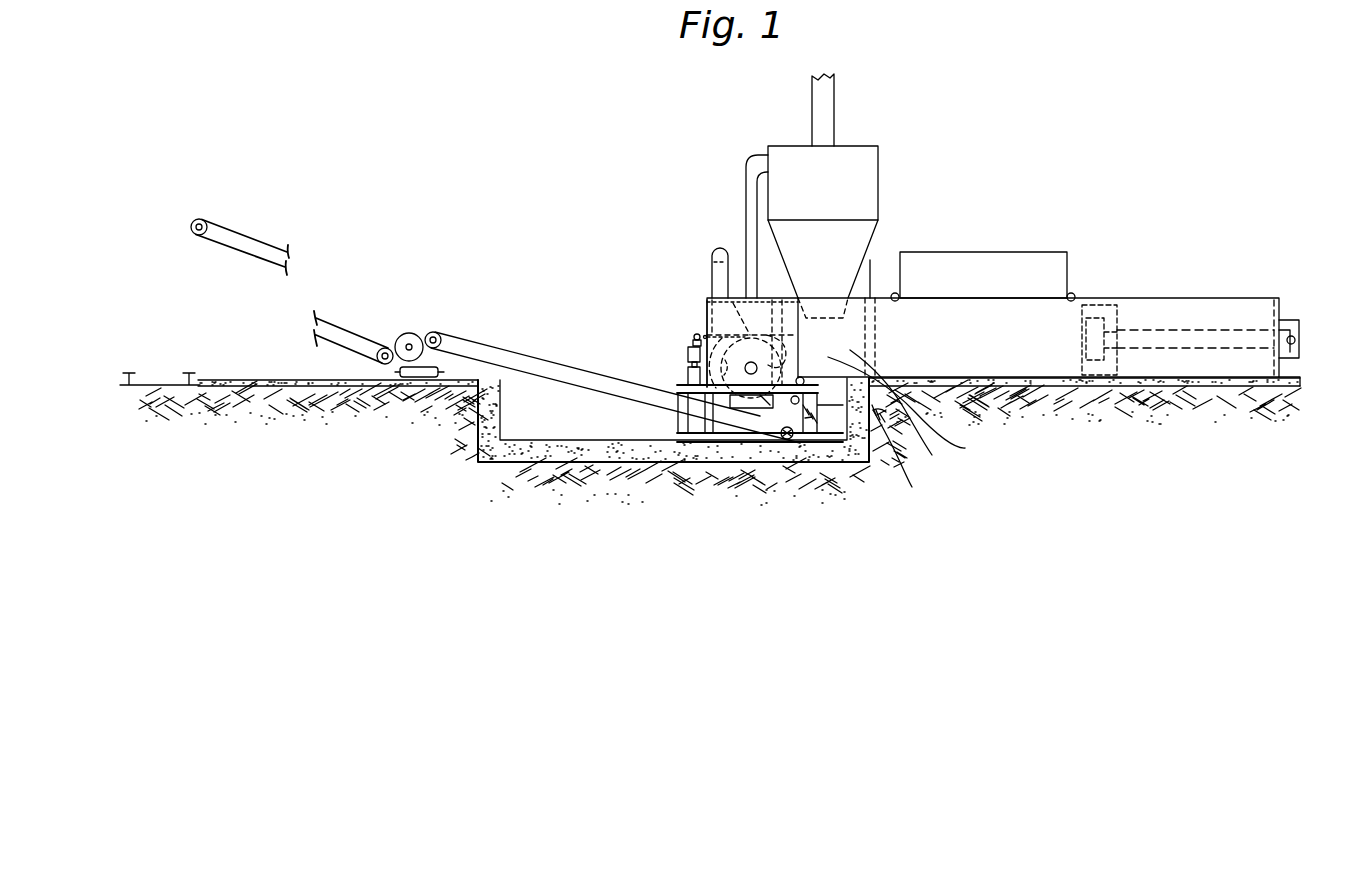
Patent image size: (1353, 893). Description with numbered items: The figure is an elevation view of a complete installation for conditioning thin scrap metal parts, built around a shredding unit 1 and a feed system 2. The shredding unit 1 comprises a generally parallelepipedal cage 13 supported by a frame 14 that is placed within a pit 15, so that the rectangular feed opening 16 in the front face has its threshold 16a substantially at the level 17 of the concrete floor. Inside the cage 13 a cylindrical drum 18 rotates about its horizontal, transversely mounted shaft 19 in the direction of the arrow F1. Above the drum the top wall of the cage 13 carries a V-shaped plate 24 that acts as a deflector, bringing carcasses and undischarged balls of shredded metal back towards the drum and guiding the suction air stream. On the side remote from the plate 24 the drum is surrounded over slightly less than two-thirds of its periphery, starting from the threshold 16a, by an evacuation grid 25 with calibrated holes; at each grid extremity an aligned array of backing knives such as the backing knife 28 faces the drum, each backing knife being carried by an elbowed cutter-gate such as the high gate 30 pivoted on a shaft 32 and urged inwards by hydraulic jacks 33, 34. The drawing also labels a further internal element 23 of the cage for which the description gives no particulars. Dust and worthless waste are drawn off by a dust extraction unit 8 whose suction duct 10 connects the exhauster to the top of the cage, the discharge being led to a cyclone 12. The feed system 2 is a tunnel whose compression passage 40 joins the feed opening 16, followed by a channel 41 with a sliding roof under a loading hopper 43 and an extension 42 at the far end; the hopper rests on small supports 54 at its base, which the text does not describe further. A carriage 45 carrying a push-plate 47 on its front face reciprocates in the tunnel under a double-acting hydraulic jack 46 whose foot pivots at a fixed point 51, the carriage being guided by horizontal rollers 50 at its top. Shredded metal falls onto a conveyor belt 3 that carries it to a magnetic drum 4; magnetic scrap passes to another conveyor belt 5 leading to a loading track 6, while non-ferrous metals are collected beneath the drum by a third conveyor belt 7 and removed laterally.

The shredding unit 1 is at (706, 301).
The feed system 2 is at (1022, 238).
The conveyor belt 3 is at (560, 366).
The magnetic drum 4 is at (414, 334).
The conveyor belt 5 is at (252, 244).
The loading track 6 is at (151, 373).
The third conveyor belt 7 is at (419, 377).
The dust extraction unit 8 is at (900, 152).
The suction duct 10 is at (716, 268).
The cyclone 12 is at (868, 172).
The cage 13 is at (707, 313).
The frame 14 is at (677, 421).
The pit 15 is at (538, 440).
The feed opening 16 is at (903, 410).
The threshold 16a is at (908, 458).
The ground level 17 is at (1290, 386).
The drum 18 is at (687, 379).
The shaft 19 is at (751, 374).
The guide 23 is at (725, 374).
The V-shaped plate 24 is at (710, 300).
The evacuation grid 25 is at (764, 403).
The backing knife 28 is at (752, 325).
The high gate 30 is at (751, 344).
The shaft 32 is at (702, 334).
The hydraulic jack 33 is at (805, 443).
The hydraulic jack 34 is at (688, 353).
The compression passage 40 is at (913, 410).
The channel 41 is at (1047, 357).
The extension 42 is at (1140, 365).
The loading hopper 43 is at (954, 260).
The carriage 45 is at (1100, 383).
The hydraulic jack 46 is at (1205, 338).
The push-plate 47 is at (1092, 383).
The horizontal rollers 50 is at (1113, 305).
The fixed point 51 is at (1290, 322).
The hopper roller 54 is at (895, 293).
The arrow F1 is at (840, 361).